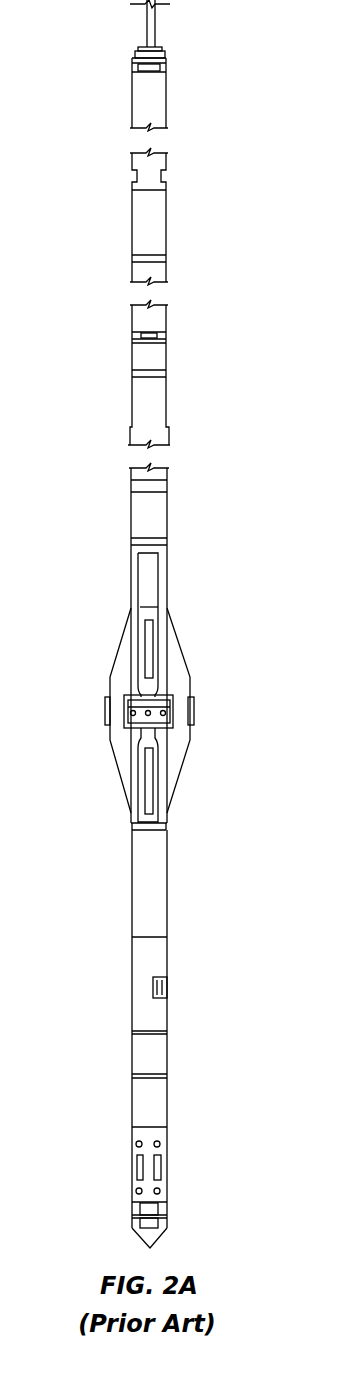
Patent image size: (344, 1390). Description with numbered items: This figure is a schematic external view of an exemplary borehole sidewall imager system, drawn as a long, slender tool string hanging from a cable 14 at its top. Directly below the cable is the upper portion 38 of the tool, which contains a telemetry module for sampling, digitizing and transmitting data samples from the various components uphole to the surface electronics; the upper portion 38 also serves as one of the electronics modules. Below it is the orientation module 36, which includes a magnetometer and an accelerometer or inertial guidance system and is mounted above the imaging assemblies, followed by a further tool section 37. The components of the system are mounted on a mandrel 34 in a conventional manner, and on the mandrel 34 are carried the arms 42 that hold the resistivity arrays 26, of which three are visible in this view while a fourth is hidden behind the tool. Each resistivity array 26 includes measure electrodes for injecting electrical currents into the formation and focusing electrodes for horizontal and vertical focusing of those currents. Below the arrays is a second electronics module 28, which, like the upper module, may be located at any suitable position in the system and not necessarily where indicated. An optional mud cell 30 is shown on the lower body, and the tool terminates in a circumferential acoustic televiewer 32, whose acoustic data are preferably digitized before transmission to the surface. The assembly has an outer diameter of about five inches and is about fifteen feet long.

The wireline cable 14 is at (155, 33).
The upper portion 38 is at (167, 85).
The orientation module 36 is at (167, 232).
The tool section 37 is at (167, 352).
The mandrel 34 is at (142, 646).
The arms 42 is at (183, 658).
The resistivity arrays 26 is at (195, 712).
The electronics module 28 is at (167, 882).
The mud cell 30 is at (167, 985).
The circumferential acoustic televiewer 32 is at (168, 1165).